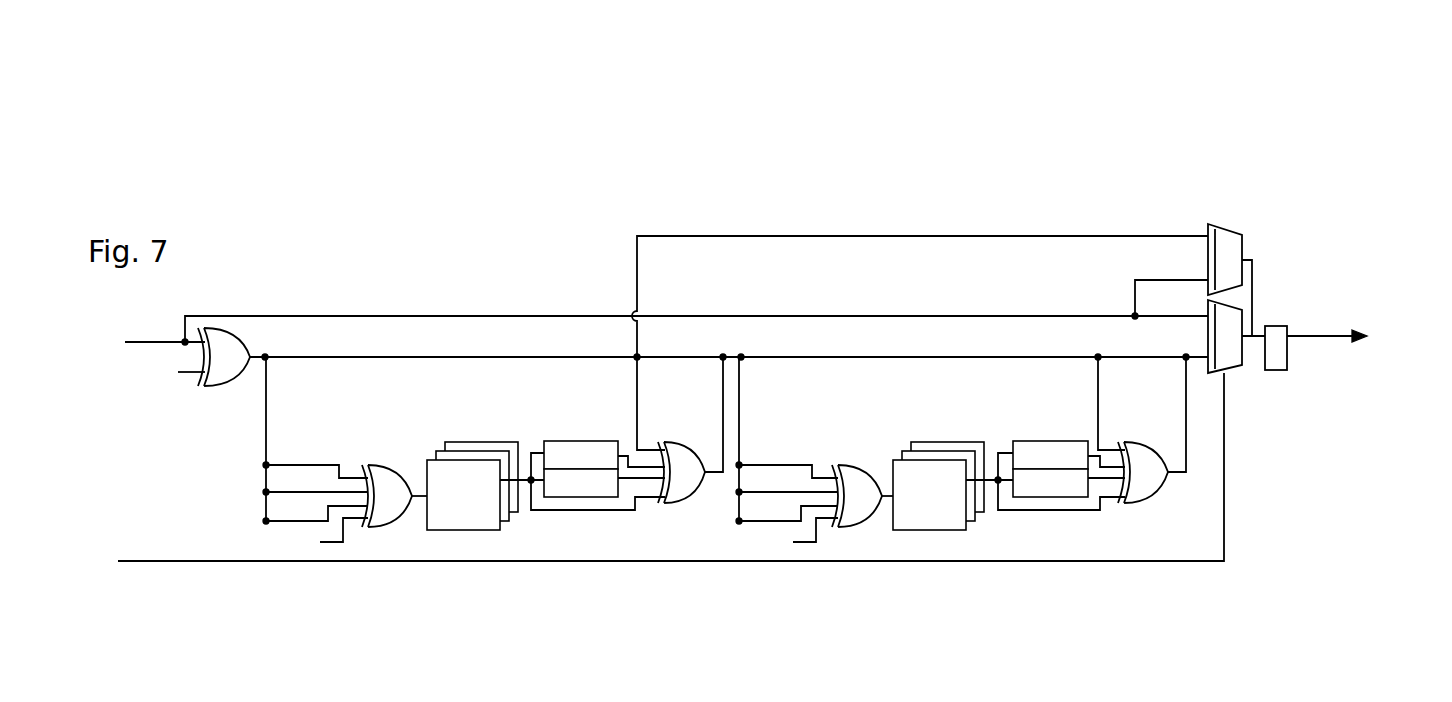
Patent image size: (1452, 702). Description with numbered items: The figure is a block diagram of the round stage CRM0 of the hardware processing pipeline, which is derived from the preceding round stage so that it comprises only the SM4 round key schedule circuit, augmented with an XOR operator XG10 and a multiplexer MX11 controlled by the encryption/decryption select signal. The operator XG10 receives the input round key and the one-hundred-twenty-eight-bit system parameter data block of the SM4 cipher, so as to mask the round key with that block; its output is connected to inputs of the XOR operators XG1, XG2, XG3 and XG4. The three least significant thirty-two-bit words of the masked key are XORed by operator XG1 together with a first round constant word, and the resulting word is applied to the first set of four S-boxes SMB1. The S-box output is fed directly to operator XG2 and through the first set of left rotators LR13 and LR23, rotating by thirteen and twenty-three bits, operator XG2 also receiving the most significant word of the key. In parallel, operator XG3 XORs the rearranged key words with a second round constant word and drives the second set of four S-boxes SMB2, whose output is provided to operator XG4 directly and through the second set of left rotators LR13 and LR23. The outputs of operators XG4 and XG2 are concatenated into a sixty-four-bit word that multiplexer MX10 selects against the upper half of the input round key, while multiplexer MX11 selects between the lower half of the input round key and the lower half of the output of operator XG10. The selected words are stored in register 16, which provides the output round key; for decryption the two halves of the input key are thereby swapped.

The round stage CRM0 is at (750, 417).
The XOR operator XG10 is at (204, 388).
The XOR operator XG1 is at (388, 465).
The XOR operator XG2 is at (690, 505).
The XOR operator XG3 is at (855, 465).
The XOR operator XG4 is at (1150, 505).
The set of four S-boxes SMB1 is at (472, 486).
The set of four S-boxes SMB2 is at (938, 486).
The left rotator by 13 bits LR13 is at (816, 455).
The left rotator by 23 bits LR23 is at (816, 483).
The multiplexer MX11 is at (1225, 259).
The multiplexer MX10 is at (1225, 336).
The register 16 is at (1278, 371).